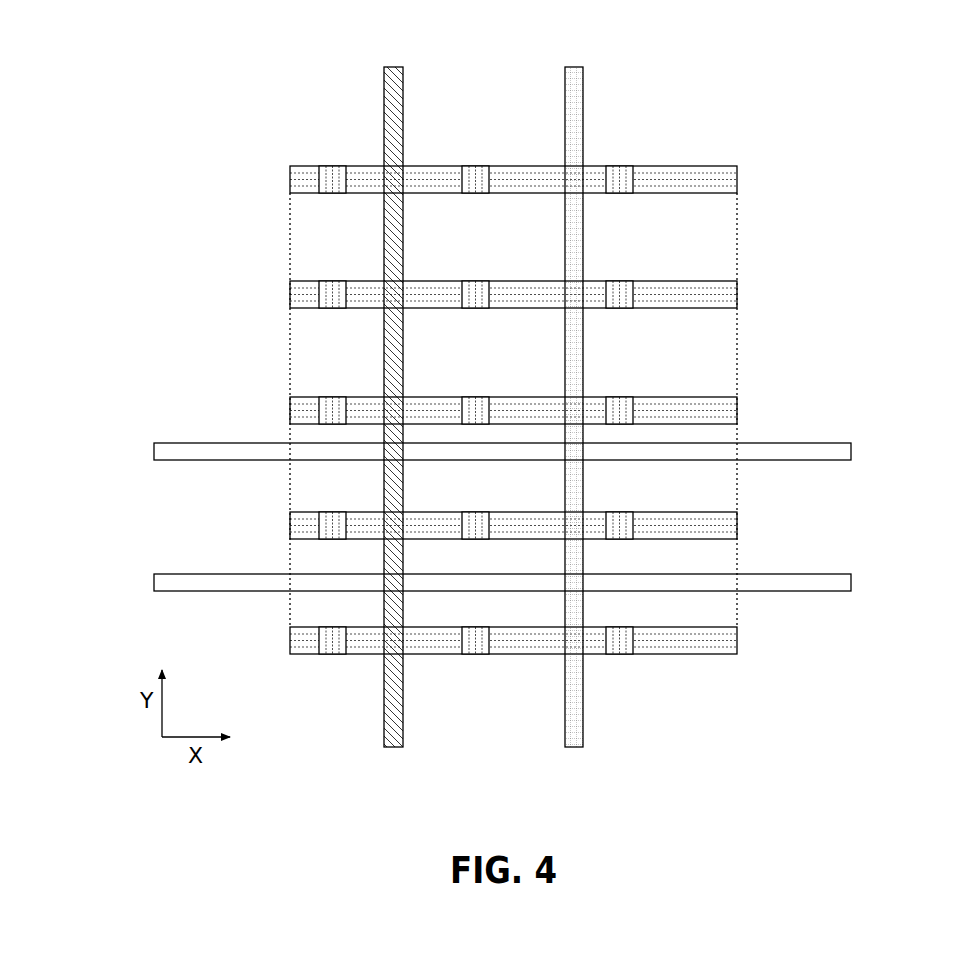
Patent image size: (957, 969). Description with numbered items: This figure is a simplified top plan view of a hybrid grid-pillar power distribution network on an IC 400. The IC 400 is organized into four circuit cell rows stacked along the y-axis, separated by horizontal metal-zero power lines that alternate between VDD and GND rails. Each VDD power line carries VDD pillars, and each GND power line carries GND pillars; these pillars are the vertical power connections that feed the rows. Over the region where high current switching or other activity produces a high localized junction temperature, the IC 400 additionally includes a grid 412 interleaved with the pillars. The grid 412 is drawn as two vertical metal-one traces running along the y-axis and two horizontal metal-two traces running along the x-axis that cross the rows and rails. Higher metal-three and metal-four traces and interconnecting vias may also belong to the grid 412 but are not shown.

The IC 400 is at (845, 84).
The grid 412 is at (573, 762).